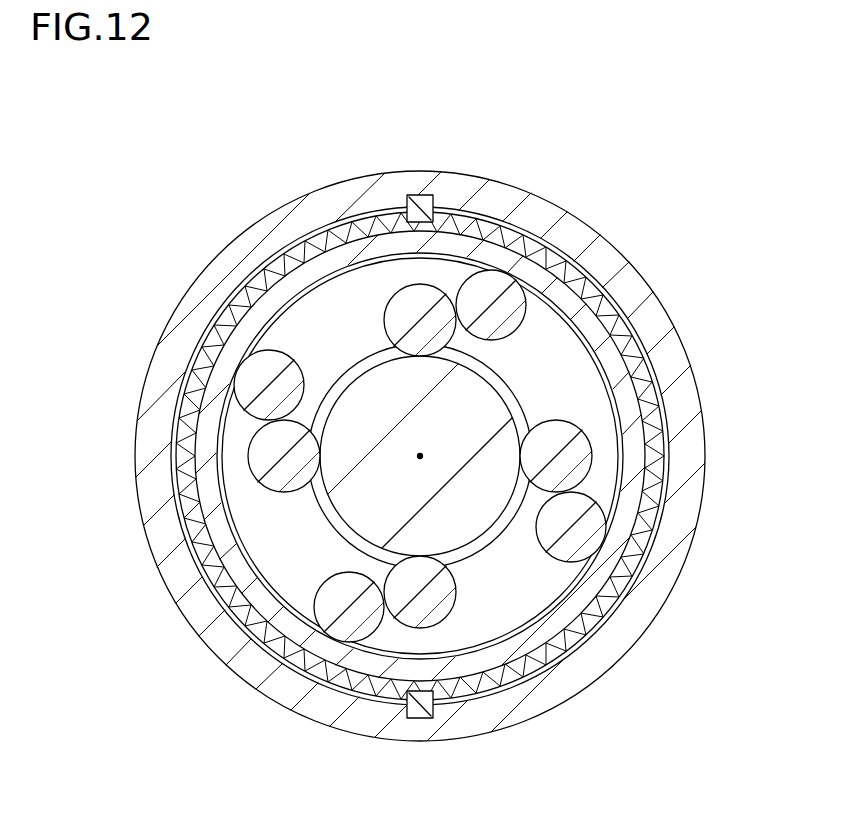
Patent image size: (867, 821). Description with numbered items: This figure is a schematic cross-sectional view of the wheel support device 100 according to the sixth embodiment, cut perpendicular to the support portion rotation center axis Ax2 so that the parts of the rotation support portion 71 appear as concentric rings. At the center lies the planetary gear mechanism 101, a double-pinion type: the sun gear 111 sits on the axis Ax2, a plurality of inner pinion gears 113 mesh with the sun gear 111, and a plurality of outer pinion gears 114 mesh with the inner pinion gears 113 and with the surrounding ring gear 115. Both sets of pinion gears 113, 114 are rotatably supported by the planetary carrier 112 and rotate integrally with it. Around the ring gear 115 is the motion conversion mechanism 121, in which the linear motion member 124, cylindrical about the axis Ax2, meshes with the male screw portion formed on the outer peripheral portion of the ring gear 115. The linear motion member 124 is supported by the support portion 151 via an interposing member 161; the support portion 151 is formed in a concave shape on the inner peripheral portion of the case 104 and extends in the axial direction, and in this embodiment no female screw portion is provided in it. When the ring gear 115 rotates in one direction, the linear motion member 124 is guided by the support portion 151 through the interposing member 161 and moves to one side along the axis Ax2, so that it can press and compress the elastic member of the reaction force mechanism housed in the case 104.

The rotating device 100 is at (667, 64).
The rotation support portion 71 is at (420, 454).
The case 104 is at (587, 225).
The motion conversion mechanism 121 is at (491, 456).
The linear motion member 124 is at (606, 297).
The support portion 151 is at (408, 202).
The interposing member 161 is at (422, 196).
The ring gear 115 is at (623, 380).
The planetary gear mechanism 101 is at (441, 230).
The planetary carrier 112 is at (491, 597).
The sun gear 111 is at (332, 508).
The inner pinion gears 113 is at (403, 291).
The outer pinion gears 114 is at (503, 283).
The support portion rotation center axis Ax2 is at (420, 459).